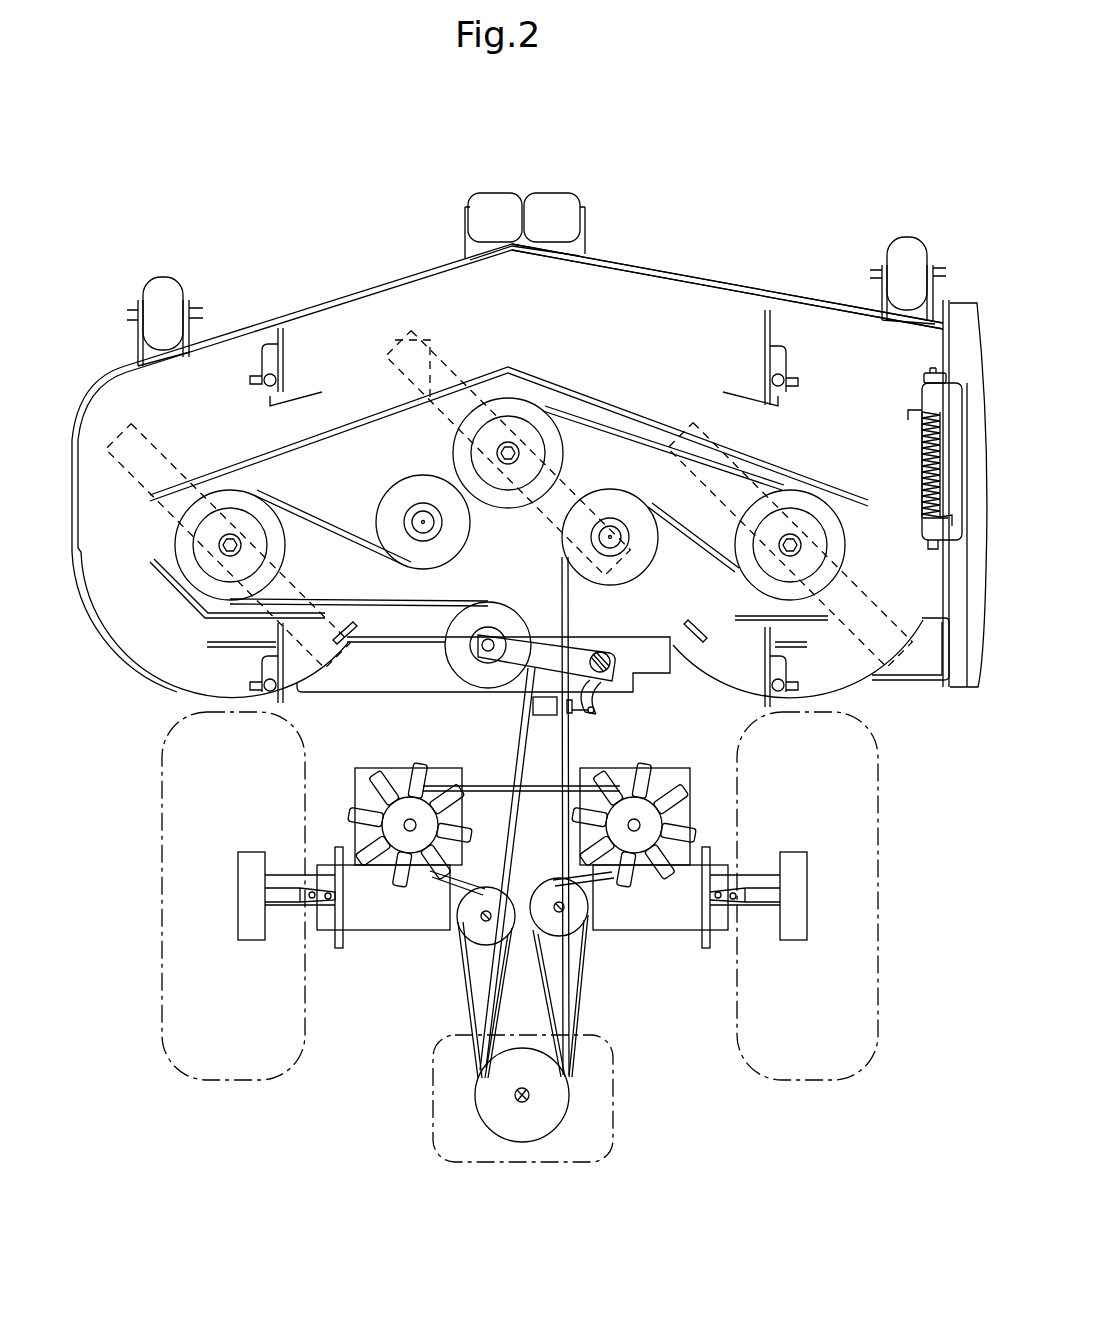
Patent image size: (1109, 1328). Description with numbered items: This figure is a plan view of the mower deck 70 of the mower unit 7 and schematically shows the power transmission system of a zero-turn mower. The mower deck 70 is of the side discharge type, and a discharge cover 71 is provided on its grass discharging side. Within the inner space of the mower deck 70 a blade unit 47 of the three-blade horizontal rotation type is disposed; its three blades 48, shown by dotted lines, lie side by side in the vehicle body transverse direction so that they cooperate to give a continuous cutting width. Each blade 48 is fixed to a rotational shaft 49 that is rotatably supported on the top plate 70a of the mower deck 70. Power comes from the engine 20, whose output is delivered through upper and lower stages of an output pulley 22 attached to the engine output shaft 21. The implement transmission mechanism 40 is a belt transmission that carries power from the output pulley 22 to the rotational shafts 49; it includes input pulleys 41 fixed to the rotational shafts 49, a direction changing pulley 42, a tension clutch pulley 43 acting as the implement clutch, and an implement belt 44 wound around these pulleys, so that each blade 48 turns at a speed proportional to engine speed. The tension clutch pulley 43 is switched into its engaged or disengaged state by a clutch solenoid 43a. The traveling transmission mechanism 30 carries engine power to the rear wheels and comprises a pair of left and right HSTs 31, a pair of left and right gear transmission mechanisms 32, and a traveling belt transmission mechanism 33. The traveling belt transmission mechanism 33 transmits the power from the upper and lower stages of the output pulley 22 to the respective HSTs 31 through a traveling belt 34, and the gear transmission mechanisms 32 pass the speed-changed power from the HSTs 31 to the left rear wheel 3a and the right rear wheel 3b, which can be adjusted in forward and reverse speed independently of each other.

The mower unit 7 is at (334, 292).
The mower deck 70 is at (621, 266).
The top plate 70a is at (697, 298).
The discharge cover 71 is at (962, 304).
The blade unit 47 is at (402, 349).
The blade 48 is at (150, 432).
The input pulley 41 is at (530, 412).
The rotational shaft 49 is at (520, 453).
The direction changing pulley 42 is at (448, 540).
The implement belt 44 is at (332, 525).
The tension clutch pulley 43 is at (462, 652).
The clutch solenoid 43a is at (550, 716).
The implement transmission mechanism 40 is at (569, 749).
The HST 31 is at (400, 770).
The traveling belt 34 is at (478, 786).
The traveling transmission mechanism 30 is at (456, 883).
The gear transmission mechanism 32 is at (378, 928).
The traveling belt transmission mechanism 33 is at (708, 801).
The left rear wheel 3a is at (162, 905).
The right rear wheel 3b is at (880, 930).
The engine 20 is at (525, 1165).
The engine output shaft 21 is at (512, 1095).
The output pulley 22 is at (550, 1100).